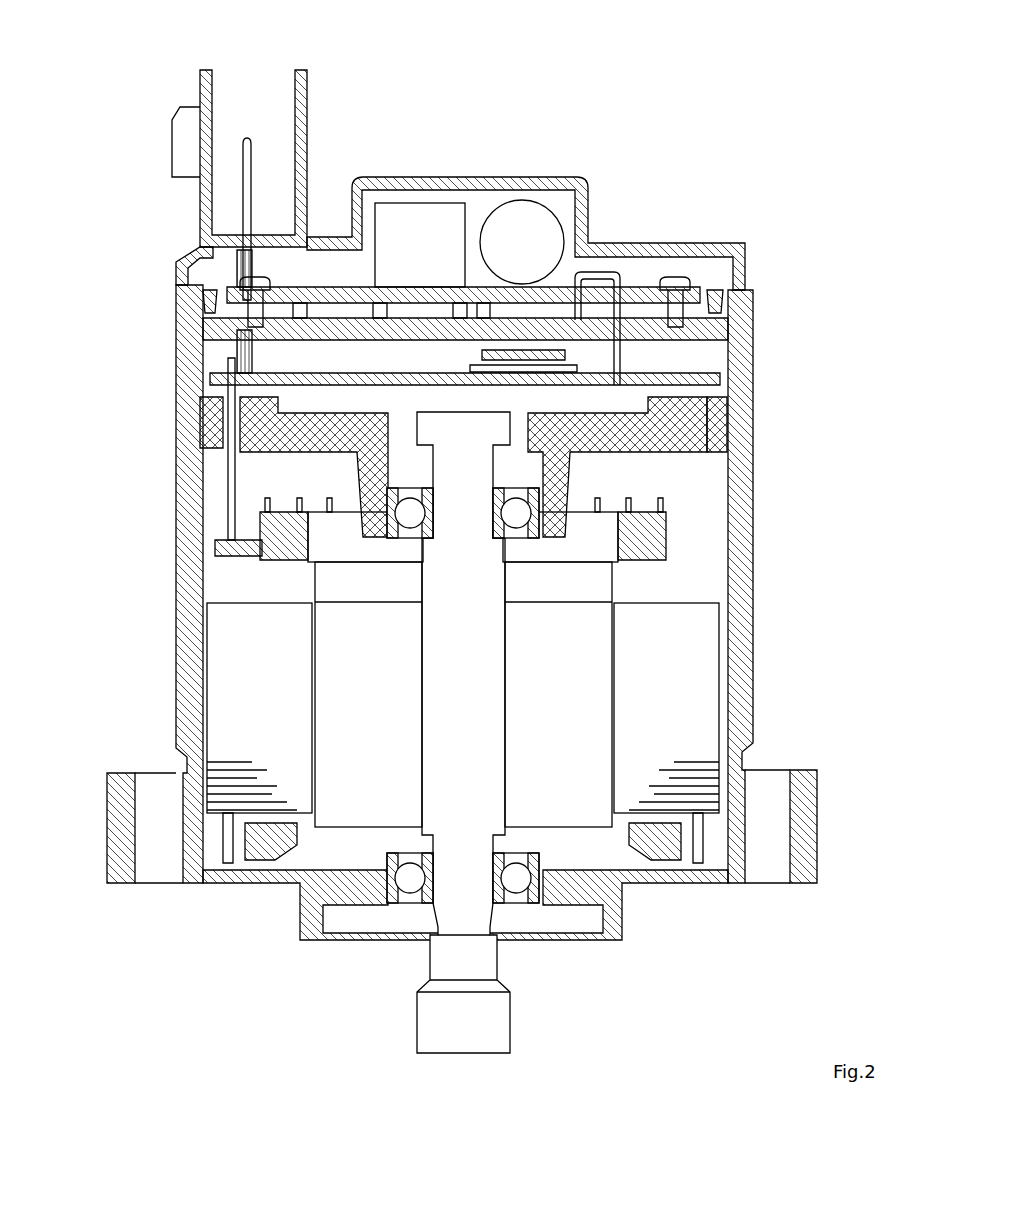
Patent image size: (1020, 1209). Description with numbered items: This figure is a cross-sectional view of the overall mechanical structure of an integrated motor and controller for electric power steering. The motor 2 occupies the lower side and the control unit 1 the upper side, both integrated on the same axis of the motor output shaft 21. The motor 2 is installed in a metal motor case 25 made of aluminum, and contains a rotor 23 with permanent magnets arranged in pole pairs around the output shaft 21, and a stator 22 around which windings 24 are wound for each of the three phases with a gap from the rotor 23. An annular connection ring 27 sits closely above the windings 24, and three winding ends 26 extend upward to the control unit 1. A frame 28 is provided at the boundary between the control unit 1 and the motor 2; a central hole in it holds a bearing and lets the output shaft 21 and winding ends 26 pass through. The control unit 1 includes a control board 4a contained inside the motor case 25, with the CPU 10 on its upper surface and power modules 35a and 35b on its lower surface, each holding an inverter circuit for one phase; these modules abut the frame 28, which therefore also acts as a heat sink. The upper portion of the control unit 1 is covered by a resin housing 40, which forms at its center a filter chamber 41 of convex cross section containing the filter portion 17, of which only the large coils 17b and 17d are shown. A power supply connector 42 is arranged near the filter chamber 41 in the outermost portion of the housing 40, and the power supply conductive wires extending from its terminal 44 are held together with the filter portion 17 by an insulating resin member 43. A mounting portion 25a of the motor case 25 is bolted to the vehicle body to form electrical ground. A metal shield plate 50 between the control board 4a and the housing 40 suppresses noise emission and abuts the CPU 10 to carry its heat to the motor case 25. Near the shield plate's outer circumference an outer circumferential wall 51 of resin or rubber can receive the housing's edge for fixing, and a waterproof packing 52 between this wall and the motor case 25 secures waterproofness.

The control unit 1 is at (150, 250).
The motor 2 is at (760, 698).
The control board 4a is at (205, 378).
The CPU 10 is at (587, 243).
The filter portion 17 is at (478, 210).
The coil 17b is at (408, 215).
The coil 17d is at (513, 215).
The motor output shaft 21 is at (505, 1015).
The stator 22 is at (700, 623).
The rotor 23 is at (595, 820).
The windings 24 is at (730, 520).
The motor case 25 is at (730, 563).
The mounting portion 25a is at (800, 800).
The winding ends 26 is at (230, 500).
The annular connection ring 27 is at (225, 548).
The frame 28 is at (733, 423).
The power module 35a is at (225, 420).
The power module 35b is at (655, 378).
The housing 40 is at (630, 245).
The filter chamber 41 is at (570, 275).
The power supply connector 42 is at (192, 100).
The insulating resin member 43 is at (323, 287).
The terminal 44 is at (253, 165).
The shield plate 50 is at (173, 317).
The outer circumferential wall 51 is at (757, 288).
The waterproof packing 52 is at (745, 300).